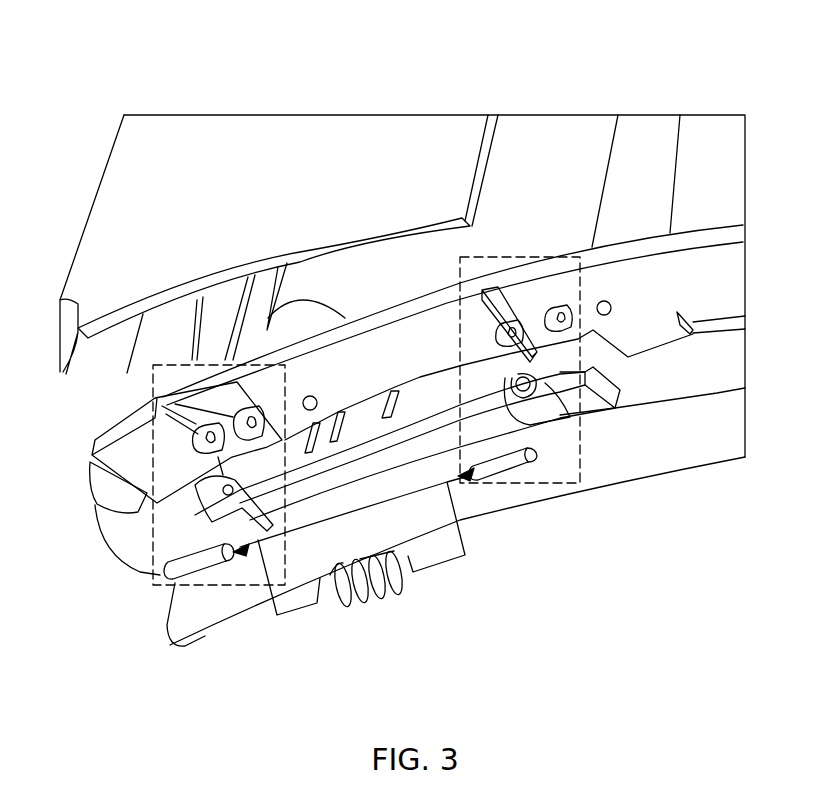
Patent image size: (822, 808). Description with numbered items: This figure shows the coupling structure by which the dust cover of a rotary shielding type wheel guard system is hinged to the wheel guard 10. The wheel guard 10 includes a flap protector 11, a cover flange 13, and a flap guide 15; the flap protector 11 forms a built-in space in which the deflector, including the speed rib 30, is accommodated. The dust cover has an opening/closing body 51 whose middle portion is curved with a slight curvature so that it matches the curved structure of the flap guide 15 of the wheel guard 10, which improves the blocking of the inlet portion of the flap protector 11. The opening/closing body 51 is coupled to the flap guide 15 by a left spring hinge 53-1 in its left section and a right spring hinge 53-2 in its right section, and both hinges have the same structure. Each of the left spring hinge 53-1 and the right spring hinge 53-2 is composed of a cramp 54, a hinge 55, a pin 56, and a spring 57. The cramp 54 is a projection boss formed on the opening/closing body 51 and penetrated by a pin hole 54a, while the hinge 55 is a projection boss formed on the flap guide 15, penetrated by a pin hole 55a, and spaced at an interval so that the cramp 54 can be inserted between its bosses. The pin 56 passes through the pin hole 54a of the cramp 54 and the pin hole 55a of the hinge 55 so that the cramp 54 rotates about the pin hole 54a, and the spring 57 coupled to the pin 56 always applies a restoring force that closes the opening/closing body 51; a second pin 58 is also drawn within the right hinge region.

The wheel guard 10 is at (718, 140).
The flap protector 11 is at (640, 140).
The cover flange 13 is at (717, 395).
The flap guide 15 is at (720, 273).
The speed rib 30 is at (232, 140).
The opening/closing body 51 is at (427, 418).
The left spring hinge 53-1 is at (160, 587).
The right spring hinge 53-2 is at (580, 430).
The cramp 54 is at (123, 558).
The pin hole 54a is at (140, 520).
The hinge 55 is at (493, 300).
The pin hole 55a is at (105, 462).
The pin 56 is at (203, 562).
The spring 57 is at (378, 610).
The second pin 58 is at (505, 462).